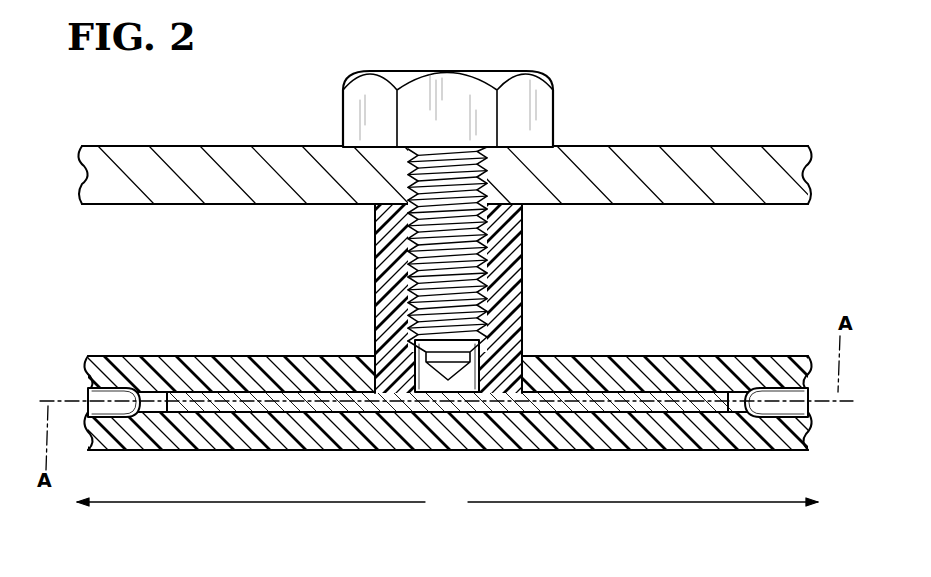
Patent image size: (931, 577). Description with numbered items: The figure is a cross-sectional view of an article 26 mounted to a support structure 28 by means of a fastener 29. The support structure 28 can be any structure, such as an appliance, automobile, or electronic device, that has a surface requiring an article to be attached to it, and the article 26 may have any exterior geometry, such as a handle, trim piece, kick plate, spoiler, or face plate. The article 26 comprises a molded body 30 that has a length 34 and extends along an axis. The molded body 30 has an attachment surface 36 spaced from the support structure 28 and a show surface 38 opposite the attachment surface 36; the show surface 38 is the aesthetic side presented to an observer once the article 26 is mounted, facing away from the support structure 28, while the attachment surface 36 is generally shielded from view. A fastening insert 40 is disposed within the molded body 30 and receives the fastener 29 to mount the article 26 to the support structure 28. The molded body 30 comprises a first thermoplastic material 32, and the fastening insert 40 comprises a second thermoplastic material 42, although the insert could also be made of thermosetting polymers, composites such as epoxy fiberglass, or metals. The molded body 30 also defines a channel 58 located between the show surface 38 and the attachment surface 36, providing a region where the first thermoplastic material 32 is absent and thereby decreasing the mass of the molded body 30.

The article 26 is at (450, 368).
The support structure 28 is at (620, 138).
The fastener 29 is at (366, 68).
The molded body 30 is at (450, 359).
The first thermoplastic material 32 is at (214, 356).
The length 34 is at (447, 502).
The attachment surface 36 is at (590, 356).
The show surface 38 is at (106, 452).
The fastening insert 40 is at (540, 268).
The second thermoplastic material 42 is at (390, 265).
The channel 58 is at (86, 392).